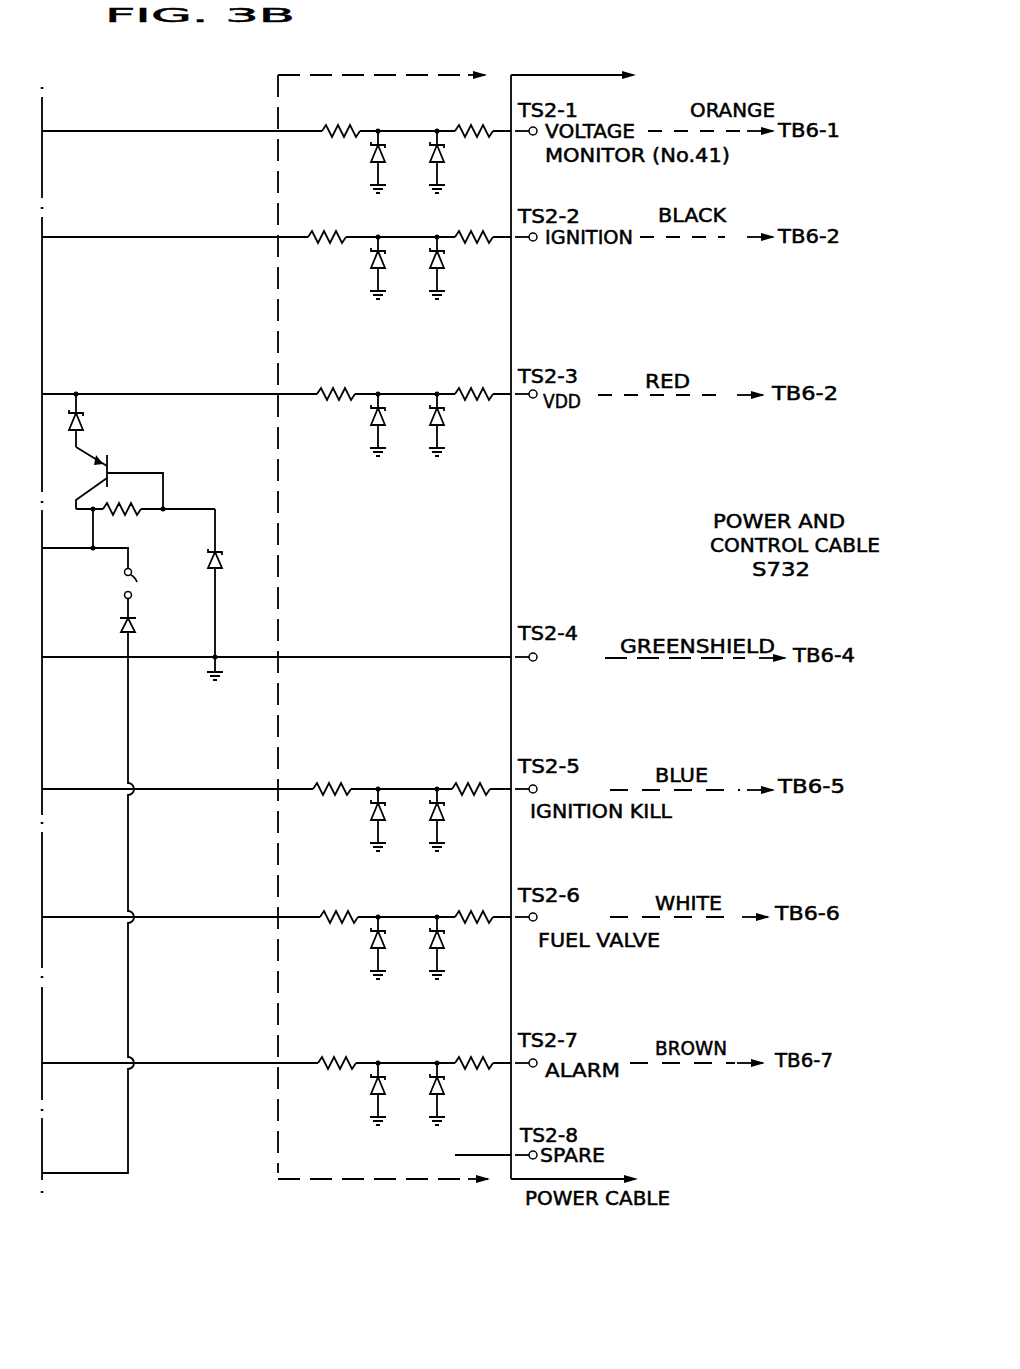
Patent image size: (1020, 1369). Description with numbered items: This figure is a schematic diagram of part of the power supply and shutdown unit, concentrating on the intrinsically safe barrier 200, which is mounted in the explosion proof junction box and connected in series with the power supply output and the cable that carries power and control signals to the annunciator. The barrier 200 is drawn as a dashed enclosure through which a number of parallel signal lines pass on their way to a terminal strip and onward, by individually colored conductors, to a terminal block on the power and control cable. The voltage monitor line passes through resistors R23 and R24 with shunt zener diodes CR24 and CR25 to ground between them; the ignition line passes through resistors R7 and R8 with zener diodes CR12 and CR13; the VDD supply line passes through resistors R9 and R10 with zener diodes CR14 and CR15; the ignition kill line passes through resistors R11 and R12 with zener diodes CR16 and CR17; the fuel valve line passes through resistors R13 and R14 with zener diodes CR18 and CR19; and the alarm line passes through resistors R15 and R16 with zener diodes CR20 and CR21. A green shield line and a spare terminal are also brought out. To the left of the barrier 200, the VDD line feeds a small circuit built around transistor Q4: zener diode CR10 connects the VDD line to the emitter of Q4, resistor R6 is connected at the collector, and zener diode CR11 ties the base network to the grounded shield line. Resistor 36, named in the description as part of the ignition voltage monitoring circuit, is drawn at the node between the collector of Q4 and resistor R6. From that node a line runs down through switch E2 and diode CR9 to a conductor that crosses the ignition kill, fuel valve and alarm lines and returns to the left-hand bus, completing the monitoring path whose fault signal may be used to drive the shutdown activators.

The resistor 36 is at (132, 528).
The intrinsically safe barrier 200 is at (384, 665).
The resistor R23 is at (343, 117).
The resistor R24 is at (472, 117).
The zener diode CR24 is at (348, 161).
The zener diode CR25 is at (465, 161).
The resistor R7 is at (327, 224).
The resistor R8 is at (474, 224).
The zener diode CR12 is at (350, 267).
The zener diode CR13 is at (464, 267).
The resistor R9 is at (335, 380).
The resistor R10 is at (472, 380).
The zener diode CR14 is at (352, 424).
The zener diode CR15 is at (463, 424).
The zener diode CR10 is at (104, 420).
The transistor Q4 is at (91, 471).
The resistor R6 is at (124, 499).
The zener diode CR11 is at (238, 594).
The switch E2 is at (116, 584).
The diode CR9 is at (103, 617).
The resistor R11 is at (332, 775).
The resistor R12 is at (468, 775).
The zener diode CR16 is at (348, 819).
The zener diode CR17 is at (465, 819).
The resistor R13 is at (339, 903).
The resistor R14 is at (474, 903).
The zener diode CR18 is at (354, 947).
The zener diode CR19 is at (465, 947).
The resistor R15 is at (337, 1049).
The resistor R16 is at (472, 1049).
The zener diode CR20 is at (347, 1093).
The zener diode CR21 is at (463, 1093).